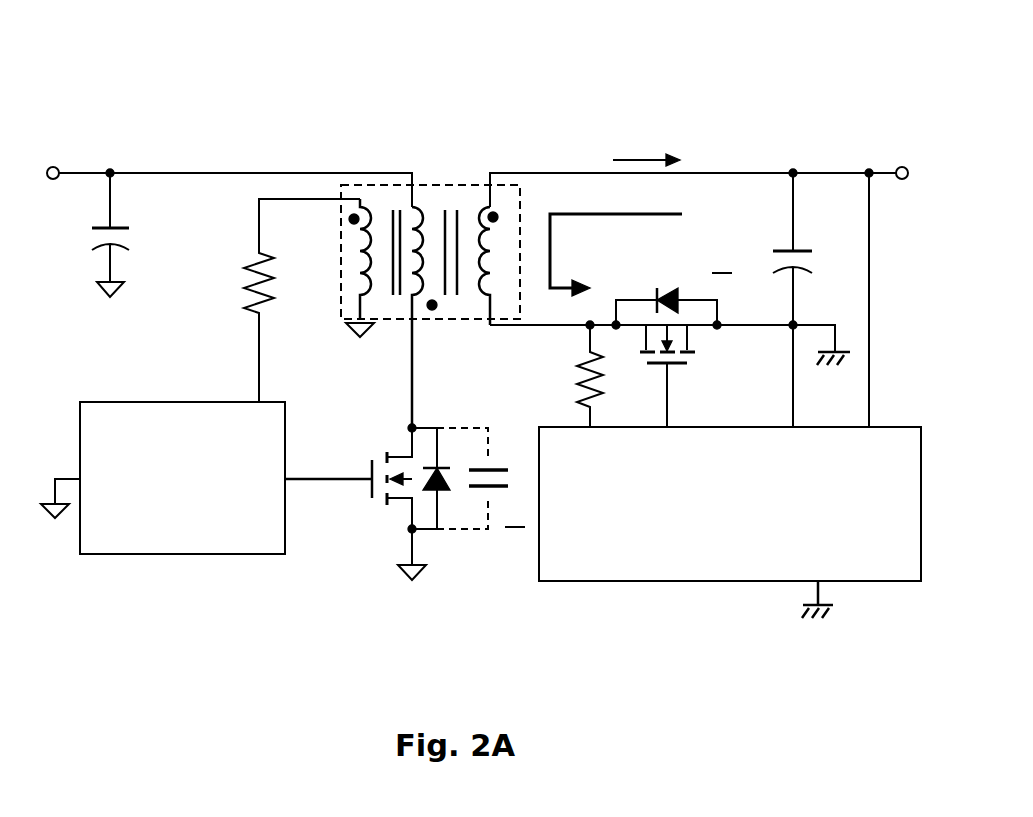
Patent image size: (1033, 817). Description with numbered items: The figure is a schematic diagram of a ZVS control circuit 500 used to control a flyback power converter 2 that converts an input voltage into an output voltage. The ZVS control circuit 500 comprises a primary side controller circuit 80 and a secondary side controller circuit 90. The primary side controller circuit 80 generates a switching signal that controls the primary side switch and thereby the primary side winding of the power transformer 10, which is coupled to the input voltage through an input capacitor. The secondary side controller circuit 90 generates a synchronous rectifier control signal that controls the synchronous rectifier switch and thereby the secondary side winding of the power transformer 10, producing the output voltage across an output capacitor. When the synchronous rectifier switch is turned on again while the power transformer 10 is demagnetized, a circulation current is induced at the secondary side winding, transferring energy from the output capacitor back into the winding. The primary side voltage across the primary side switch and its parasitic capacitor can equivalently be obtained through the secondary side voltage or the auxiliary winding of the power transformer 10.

The flyback power converter 2 is at (170, 62).
The power transformer 10 is at (522, 200).
The primary side controller circuit 80 is at (170, 538).
The secondary side controller circuit 90 is at (704, 567).
The ZVS control circuit 500 is at (218, 667).